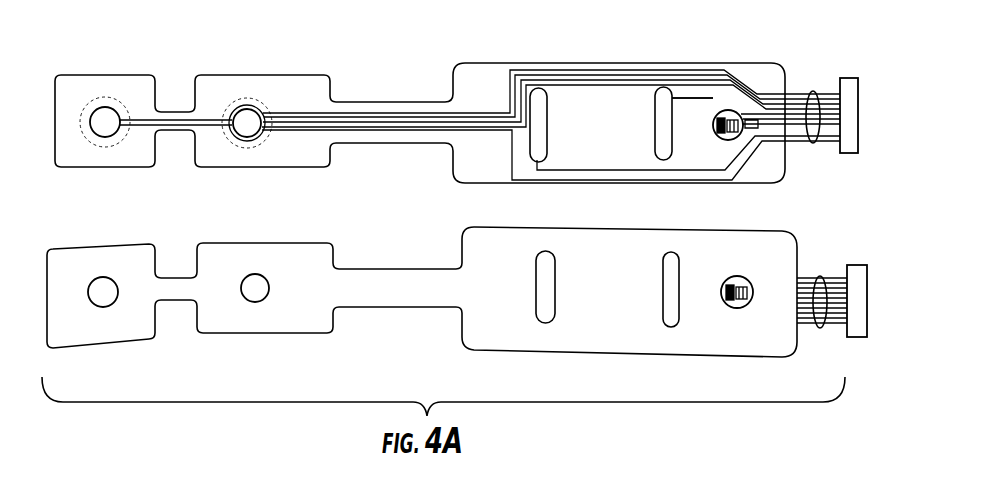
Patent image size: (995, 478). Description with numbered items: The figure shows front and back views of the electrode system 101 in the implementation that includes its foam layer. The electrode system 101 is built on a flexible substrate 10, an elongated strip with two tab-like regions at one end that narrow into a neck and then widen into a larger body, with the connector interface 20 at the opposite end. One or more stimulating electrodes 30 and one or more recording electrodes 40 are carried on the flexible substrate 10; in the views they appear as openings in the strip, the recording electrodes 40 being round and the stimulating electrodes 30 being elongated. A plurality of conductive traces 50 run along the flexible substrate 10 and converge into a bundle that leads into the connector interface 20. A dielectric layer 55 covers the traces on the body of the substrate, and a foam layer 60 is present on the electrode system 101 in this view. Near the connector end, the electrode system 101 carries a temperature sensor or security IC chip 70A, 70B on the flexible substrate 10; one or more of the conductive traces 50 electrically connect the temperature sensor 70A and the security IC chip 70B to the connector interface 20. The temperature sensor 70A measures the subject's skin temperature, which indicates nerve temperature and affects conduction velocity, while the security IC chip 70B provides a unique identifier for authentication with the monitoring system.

The flexible substrate 10 is at (606, 61).
The electrode system 101 is at (137, 205).
The connector interface 20 is at (850, 74).
The stimulating electrodes 30 is at (539, 96).
The recording electrodes 40 is at (108, 108).
The conductive traces 50 is at (816, 89).
The dielectric layer 55 is at (616, 108).
The foam layer 60 is at (247, 87).
The temperature sensor 70A is at (742, 164).
The security IC chip 70B is at (734, 108).